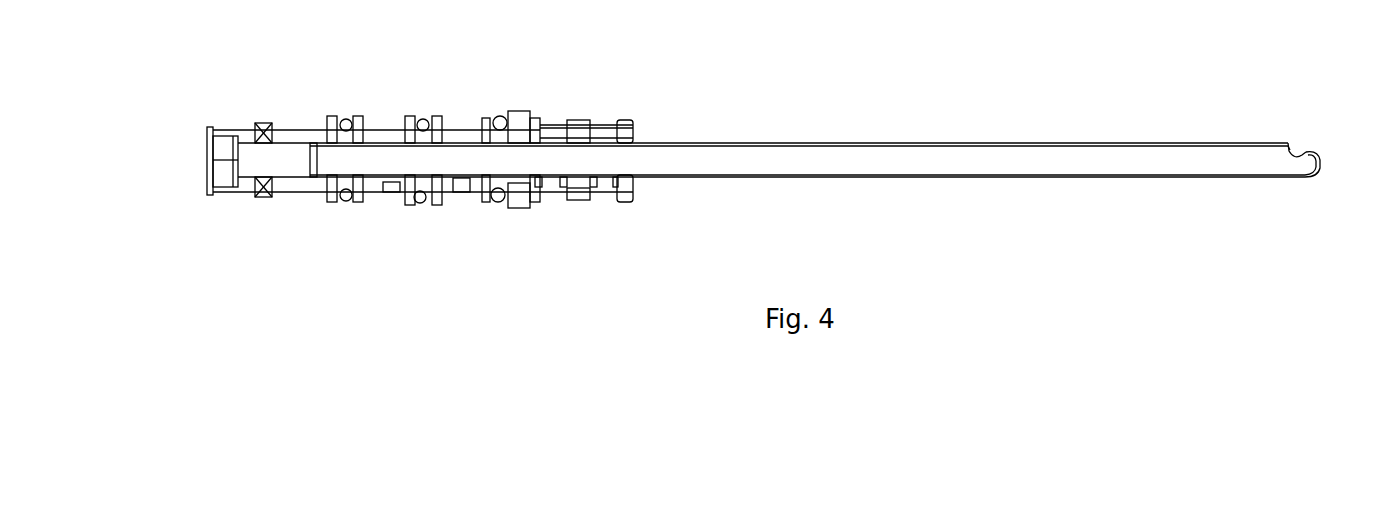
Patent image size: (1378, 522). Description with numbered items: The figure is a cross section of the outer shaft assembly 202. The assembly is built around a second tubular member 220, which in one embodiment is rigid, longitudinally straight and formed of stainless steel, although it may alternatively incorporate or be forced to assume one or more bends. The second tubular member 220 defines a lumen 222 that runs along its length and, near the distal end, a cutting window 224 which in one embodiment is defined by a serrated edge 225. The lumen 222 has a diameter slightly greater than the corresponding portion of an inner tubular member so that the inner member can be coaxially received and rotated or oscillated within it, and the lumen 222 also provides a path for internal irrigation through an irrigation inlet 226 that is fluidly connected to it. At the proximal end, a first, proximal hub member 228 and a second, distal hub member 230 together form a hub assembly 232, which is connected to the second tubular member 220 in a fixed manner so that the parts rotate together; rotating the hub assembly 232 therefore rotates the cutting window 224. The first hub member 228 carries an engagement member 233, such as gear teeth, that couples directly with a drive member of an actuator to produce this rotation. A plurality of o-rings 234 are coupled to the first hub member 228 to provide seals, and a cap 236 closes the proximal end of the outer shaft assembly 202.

The outer shaft assembly 202 is at (811, 33).
The second tubular member 220 is at (939, 180).
The lumen 222 is at (890, 158).
The cutting window 224 is at (1297, 138).
The serrated edge 225 is at (1310, 152).
The irrigation inlet 226 is at (394, 181).
The first, proximal hub member 228 is at (379, 126).
The second, distal hub member 230 is at (576, 118).
The hub assembly 232 is at (463, 100).
The engagement member 233 is at (263, 123).
The o-rings 234 is at (429, 205).
The cap 236 is at (219, 174).